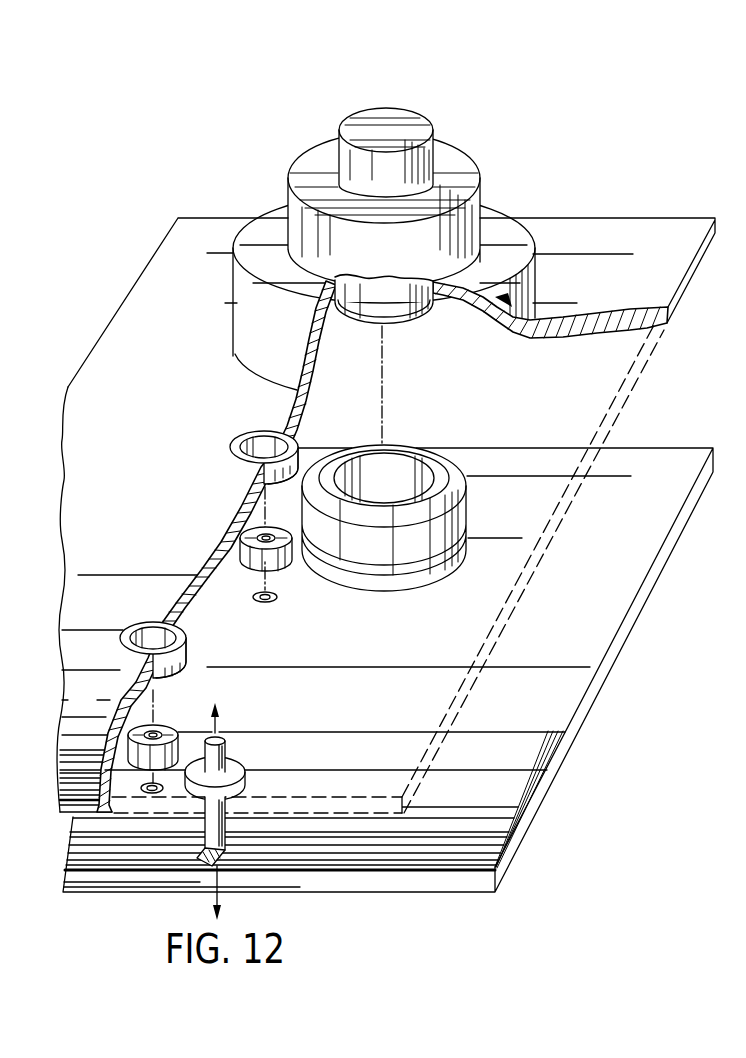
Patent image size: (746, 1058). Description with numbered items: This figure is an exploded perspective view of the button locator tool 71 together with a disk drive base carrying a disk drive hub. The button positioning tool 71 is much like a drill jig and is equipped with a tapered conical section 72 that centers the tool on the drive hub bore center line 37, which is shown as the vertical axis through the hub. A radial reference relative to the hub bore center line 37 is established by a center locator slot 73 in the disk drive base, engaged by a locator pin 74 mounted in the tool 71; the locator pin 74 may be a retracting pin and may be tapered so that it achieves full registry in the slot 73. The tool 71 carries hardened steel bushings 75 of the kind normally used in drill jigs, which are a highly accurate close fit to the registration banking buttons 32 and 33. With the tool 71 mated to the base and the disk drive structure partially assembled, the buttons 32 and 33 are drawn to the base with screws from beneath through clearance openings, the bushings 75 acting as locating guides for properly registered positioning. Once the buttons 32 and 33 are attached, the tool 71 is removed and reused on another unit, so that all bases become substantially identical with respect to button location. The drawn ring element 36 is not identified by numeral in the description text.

The button locator tool 71 is at (607, 220).
The tapered conical section 72 is at (420, 318).
The hub bore center line 37 is at (386, 411).
The ring bushing 36 is at (467, 527).
The hardened steel bushings 75 is at (240, 433).
The button 32 is at (240, 538).
The button 33 is at (130, 735).
The center locator slot 73 is at (197, 850).
The locator pin 74 is at (227, 823).